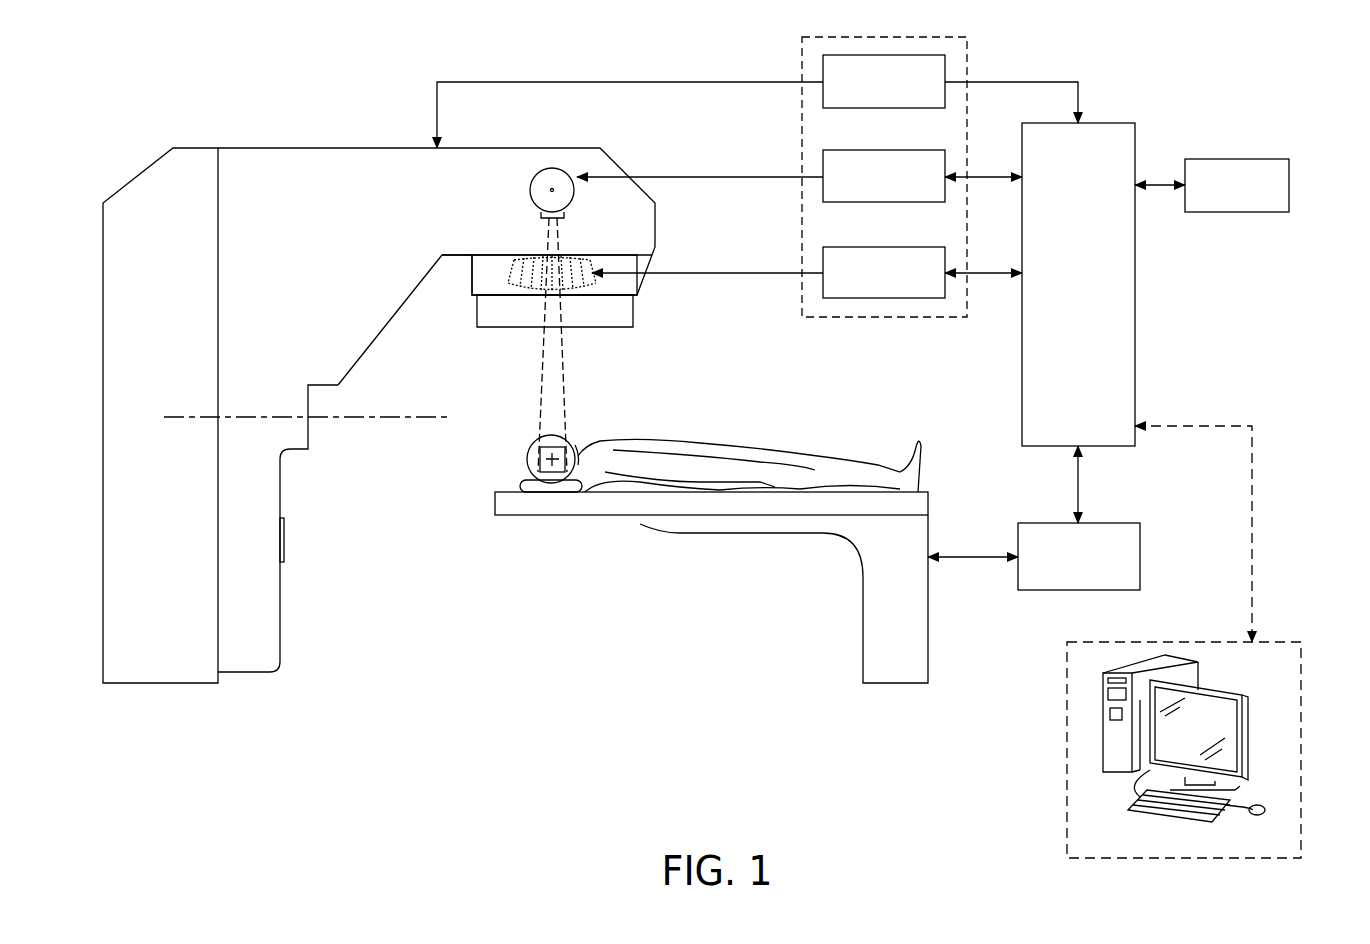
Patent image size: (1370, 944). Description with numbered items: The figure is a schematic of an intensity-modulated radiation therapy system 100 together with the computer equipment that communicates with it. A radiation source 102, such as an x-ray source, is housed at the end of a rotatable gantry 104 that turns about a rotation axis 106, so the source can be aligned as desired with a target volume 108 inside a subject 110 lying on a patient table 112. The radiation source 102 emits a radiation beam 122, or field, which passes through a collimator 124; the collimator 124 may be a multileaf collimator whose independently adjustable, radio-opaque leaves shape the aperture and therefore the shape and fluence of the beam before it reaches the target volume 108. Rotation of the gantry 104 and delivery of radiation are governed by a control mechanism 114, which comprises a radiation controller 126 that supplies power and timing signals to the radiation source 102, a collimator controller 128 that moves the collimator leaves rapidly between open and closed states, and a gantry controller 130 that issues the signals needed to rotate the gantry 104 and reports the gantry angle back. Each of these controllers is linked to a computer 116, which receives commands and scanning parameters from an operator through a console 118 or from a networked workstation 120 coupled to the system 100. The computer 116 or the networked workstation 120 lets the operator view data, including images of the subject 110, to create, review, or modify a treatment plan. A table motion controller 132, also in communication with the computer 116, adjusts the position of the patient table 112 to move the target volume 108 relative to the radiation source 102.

The therapy system 100 is at (180, 132).
The radiation source 102 is at (552, 168).
The rotatable gantry 104 is at (312, 148).
The rotation axis 106 is at (403, 417).
The target volume 108 is at (547, 447).
The subject 110 is at (645, 437).
The patient table 112 is at (495, 503).
The control mechanism 114 is at (880, 317).
The computer 116 is at (1135, 145).
The console 118 is at (1237, 212).
The networked workstation 120 is at (1301, 710).
The radiation beam 122 is at (565, 405).
The collimator 124 is at (512, 270).
The radiation controller 126 is at (884, 150).
The collimator controller 128 is at (880, 247).
The gantry controller 130 is at (884, 108).
The table motion controller 132 is at (1140, 557).